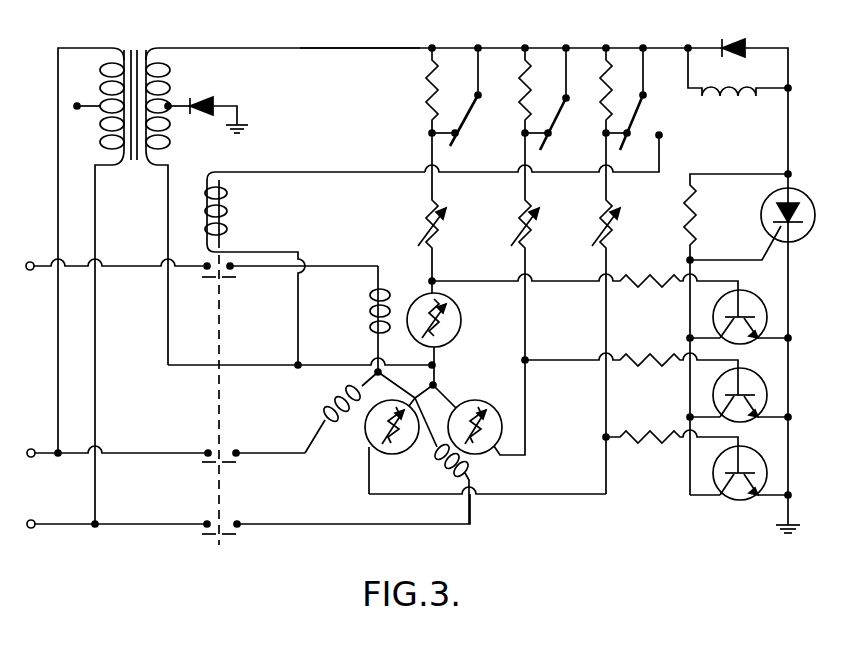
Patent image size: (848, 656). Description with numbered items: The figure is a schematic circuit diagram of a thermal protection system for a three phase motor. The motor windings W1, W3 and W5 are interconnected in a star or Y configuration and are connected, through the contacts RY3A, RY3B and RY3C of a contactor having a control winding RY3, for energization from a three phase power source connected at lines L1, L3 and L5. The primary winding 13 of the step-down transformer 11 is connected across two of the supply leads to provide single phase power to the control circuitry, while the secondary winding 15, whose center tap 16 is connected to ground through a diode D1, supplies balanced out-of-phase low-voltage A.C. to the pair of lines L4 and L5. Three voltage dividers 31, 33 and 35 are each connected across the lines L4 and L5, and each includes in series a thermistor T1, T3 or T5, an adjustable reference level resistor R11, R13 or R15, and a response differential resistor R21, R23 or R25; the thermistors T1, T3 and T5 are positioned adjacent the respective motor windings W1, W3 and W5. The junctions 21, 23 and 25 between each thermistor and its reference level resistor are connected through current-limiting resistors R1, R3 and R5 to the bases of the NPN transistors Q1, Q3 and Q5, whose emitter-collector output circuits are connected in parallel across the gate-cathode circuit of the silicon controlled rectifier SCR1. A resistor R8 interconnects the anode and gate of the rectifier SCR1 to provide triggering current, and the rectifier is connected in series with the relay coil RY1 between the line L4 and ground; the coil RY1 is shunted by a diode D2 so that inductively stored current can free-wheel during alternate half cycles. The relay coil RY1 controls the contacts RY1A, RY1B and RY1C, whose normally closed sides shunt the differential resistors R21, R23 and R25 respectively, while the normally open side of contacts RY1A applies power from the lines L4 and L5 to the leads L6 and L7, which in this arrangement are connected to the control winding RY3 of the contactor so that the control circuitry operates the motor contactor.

The step-down transformer 11 is at (134, 163).
The primary winding 13 is at (98, 126).
The secondary winding 15 is at (168, 72).
The center tap 16 is at (170, 110).
The diode D1 is at (205, 95).
The diode D2 is at (738, 36).
The supply line L1 is at (48, 456).
The supply line L3 is at (48, 527).
The line L4 is at (333, 50).
The line L5 is at (50, 268).
The lead L6 is at (300, 316).
The lead L7 is at (352, 174).
The relay coil RY1 is at (740, 100).
The relay contacts RY1A is at (636, 120).
The relay contacts RY1B is at (556, 120).
The relay contacts RY1C is at (462, 130).
The control winding RY3 is at (228, 212).
The contactor contact RY3A is at (226, 282).
The contactor contact RY3B is at (232, 468).
The contactor contact RY3C is at (238, 534).
The response differential resistor R25 is at (415, 90).
The response differential resistor R23 is at (517, 84).
The response differential resistor R21 is at (598, 84).
The adjustable reference level resistor R15 is at (446, 236).
The adjustable reference level resistor R13 is at (538, 236).
The adjustable reference level resistor R11 is at (618, 236).
The resistor R8 is at (700, 194).
The current-limiting resistor R5 is at (650, 284).
The current-limiting resistor R3 is at (648, 363).
The current-limiting resistor R1 is at (646, 440).
The silicon controlled rectifier SCR1 is at (762, 232).
The NPN transistor Q1 is at (755, 454).
The NPN transistor Q3 is at (755, 376).
The NPN transistor Q5 is at (755, 298).
The thermistor T1 is at (366, 440).
The thermistor T3 is at (486, 400).
The thermistor T5 is at (461, 316).
The motor winding W1 is at (334, 398).
The motor winding W3 is at (435, 470).
The motor winding W5 is at (368, 300).
The junction 21 is at (604, 438).
The junction 23 is at (528, 358).
The junction 25 is at (436, 279).
The voltage divider 31 is at (602, 400).
The voltage divider 33 is at (538, 298).
The voltage divider 35 is at (420, 270).